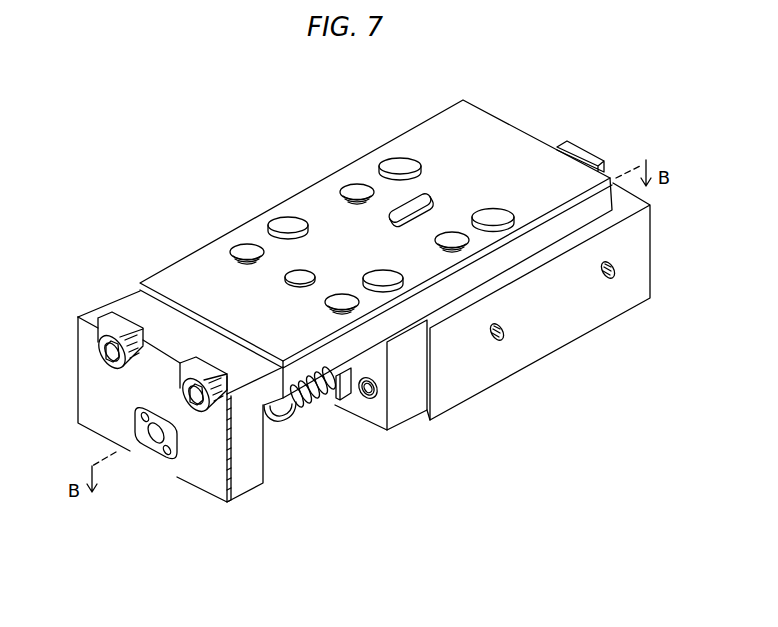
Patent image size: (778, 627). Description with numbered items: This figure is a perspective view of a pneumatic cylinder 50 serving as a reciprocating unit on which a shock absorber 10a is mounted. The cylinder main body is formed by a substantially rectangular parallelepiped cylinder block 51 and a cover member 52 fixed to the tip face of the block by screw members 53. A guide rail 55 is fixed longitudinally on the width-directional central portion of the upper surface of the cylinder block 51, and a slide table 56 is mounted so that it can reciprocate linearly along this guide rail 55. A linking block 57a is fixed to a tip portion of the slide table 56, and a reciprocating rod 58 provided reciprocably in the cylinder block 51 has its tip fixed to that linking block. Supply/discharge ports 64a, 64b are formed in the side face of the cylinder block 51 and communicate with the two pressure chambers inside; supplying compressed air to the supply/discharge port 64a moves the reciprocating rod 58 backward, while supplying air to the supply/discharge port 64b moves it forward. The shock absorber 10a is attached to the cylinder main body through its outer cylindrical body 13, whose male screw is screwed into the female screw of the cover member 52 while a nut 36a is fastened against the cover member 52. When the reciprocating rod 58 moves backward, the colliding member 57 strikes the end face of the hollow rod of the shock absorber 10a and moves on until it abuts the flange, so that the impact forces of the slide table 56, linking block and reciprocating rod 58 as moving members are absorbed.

The pneumatic cylinder 50 is at (519, 125).
The cylinder block 51 is at (567, 334).
The cover member 52 is at (407, 409).
The screw members 53 is at (363, 403).
The guide rail 55 is at (578, 148).
The slide table 56 is at (410, 143).
The colliding member 57 is at (190, 485).
The linking block 57a is at (247, 489).
The reciprocating rod 58 is at (155, 448).
The outer cylindrical body 13 is at (273, 418).
The shock absorber 10a is at (300, 414).
The nut 36a is at (334, 404).
The supply/discharge port 64a is at (505, 342).
The supply/discharge port 64b is at (615, 278).